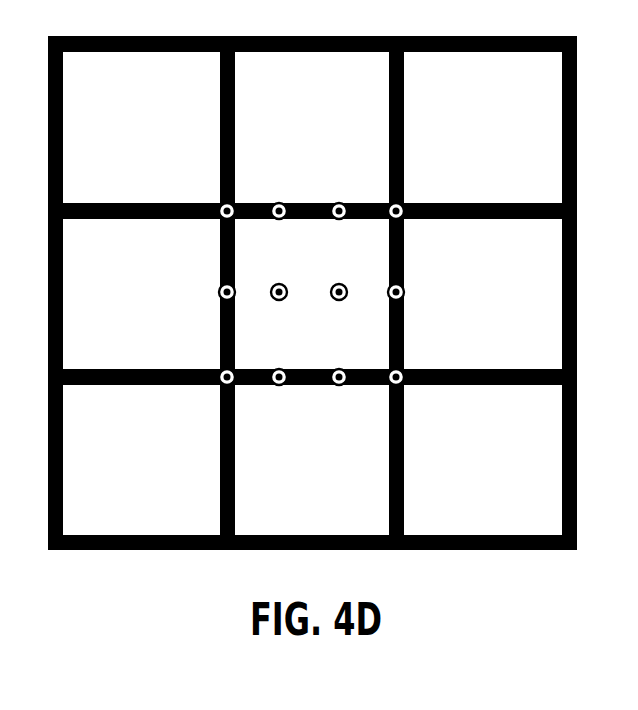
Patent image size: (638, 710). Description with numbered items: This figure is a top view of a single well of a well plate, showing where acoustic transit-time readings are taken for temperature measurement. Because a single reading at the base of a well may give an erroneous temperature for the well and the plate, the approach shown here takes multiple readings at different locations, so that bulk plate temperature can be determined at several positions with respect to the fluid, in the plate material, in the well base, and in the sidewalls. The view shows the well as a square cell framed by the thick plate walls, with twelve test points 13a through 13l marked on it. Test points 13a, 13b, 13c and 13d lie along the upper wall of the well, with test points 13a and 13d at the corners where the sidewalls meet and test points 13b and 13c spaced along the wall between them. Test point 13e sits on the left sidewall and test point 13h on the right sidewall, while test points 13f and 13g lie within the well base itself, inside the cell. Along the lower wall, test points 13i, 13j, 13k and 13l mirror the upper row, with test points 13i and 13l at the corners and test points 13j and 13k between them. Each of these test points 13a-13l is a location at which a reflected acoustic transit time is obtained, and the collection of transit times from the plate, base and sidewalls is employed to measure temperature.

The test point 13a is at (221, 206).
The test point 13b is at (279, 203).
The test point 13c is at (340, 203).
The test point 13d is at (402, 205).
The test point 13e is at (219, 292).
The test point 13f is at (285, 285).
The test point 13g is at (338, 302).
The test point 13h is at (404, 292).
The test point 13i is at (221, 387).
The test point 13j is at (279, 386).
The test point 13k is at (339, 386).
The test point 13l is at (403, 388).